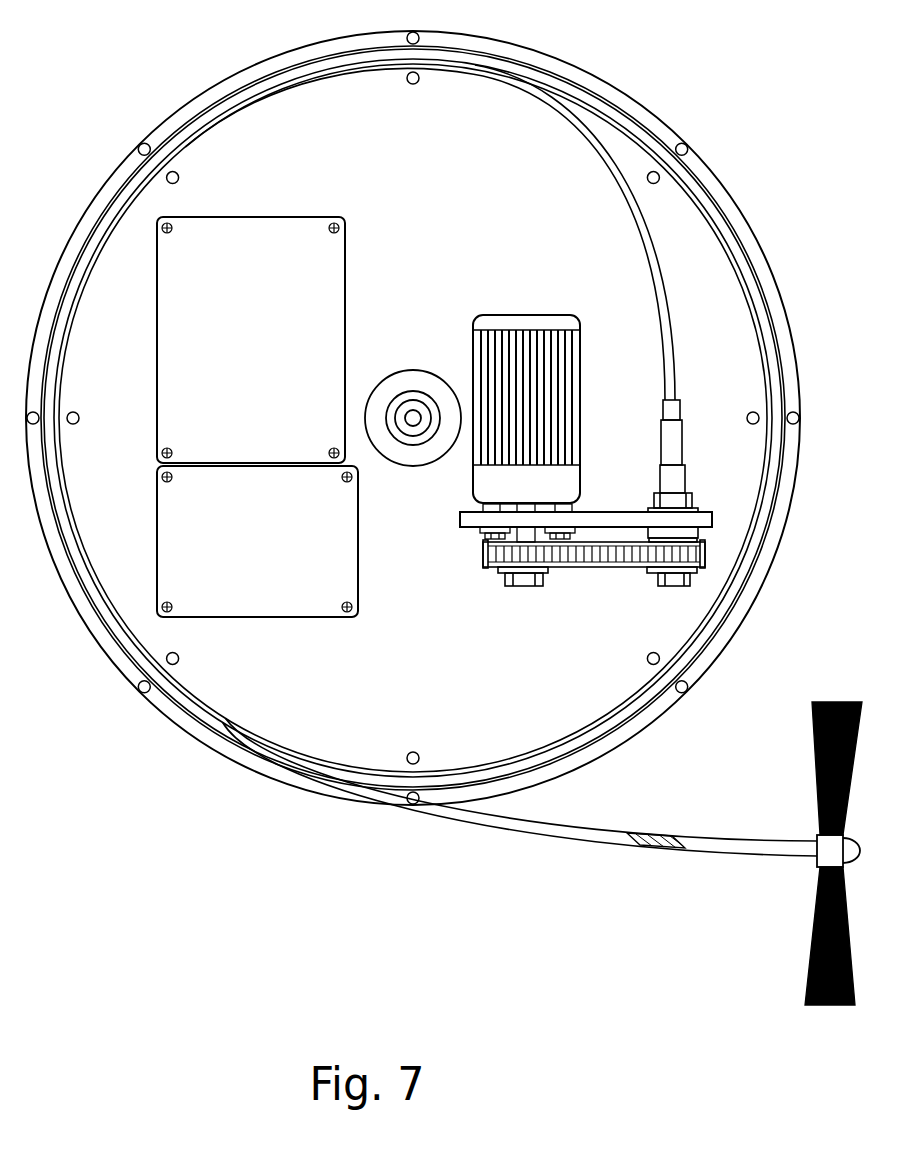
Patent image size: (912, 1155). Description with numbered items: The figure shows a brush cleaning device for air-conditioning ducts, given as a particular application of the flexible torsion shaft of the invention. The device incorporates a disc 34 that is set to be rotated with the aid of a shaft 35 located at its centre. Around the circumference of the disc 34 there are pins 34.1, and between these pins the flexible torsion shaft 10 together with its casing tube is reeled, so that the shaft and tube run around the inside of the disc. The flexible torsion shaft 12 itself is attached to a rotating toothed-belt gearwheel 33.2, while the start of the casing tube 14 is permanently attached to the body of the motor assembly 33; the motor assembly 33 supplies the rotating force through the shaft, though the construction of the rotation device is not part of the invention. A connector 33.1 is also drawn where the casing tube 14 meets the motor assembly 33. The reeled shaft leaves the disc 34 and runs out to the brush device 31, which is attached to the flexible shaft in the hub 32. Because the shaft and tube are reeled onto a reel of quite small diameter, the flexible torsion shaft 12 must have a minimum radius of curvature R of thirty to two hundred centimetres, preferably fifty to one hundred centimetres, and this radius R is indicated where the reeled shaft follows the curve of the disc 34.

The flexible torsion shaft with casing tube 10 is at (533, 870).
The flexible torsion shaft 12 is at (650, 849).
The casing tube 14 is at (662, 272).
The brush device 31 is at (830, 843).
The hub 32 is at (769, 909).
The motor assembly 33 is at (599, 288).
The connector 33.1 is at (677, 440).
The toothed-belt gearwheel 33.2 is at (691, 553).
The disc 34 is at (456, 663).
The pins 34.1 is at (173, 171).
The shaft 35 is at (413, 418).
The minimum radius of curvature R is at (547, 125).